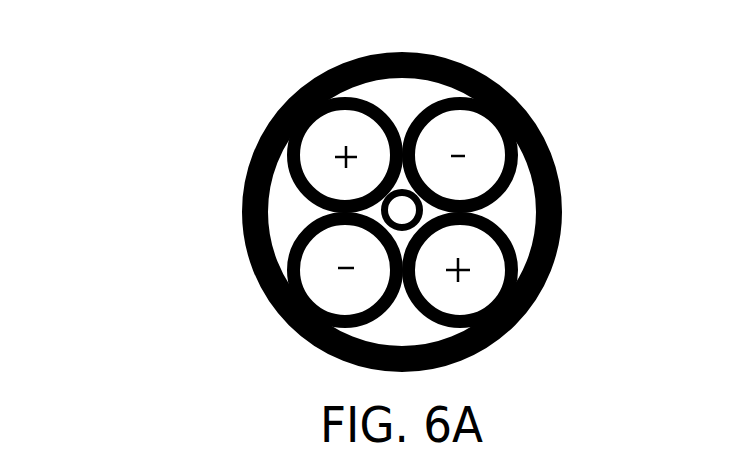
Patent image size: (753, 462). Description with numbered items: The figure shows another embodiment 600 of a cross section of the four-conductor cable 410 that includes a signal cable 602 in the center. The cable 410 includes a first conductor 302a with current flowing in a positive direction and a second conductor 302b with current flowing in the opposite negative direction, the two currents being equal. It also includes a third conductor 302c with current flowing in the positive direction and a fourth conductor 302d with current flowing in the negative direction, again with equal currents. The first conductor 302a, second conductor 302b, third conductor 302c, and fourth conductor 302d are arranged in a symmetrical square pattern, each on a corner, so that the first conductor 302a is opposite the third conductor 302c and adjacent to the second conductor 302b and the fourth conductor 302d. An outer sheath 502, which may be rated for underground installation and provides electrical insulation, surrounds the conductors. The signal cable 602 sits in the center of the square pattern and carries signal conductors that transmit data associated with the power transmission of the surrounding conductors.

The embodiment of a cross section of the four-conductor cable 600 is at (147, 49).
The four-conductor cable 410 is at (276, 65).
The outer sheath 502 is at (243, 210).
The first conductor 302a is at (288, 156).
The second conductor 302b is at (516, 151).
The third conductor 302c is at (515, 266).
The fourth conductor 302d is at (293, 266).
The signal cable 602 is at (403, 212).